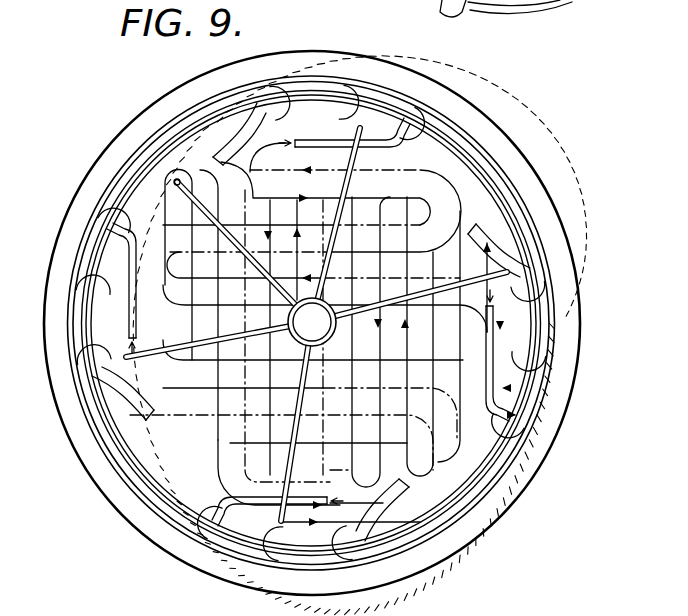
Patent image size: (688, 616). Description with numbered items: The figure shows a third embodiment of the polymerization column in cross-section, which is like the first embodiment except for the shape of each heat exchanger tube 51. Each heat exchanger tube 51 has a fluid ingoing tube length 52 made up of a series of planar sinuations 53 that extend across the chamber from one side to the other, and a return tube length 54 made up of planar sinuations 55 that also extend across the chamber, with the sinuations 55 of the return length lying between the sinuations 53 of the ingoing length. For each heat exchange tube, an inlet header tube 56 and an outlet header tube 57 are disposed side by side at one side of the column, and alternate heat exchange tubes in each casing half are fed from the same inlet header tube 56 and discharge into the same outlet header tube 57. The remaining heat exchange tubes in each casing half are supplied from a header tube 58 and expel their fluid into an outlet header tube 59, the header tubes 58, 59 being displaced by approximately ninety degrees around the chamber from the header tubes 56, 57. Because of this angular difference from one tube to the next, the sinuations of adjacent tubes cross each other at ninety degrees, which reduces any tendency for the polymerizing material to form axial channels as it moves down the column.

The heat exchanger tube 51 is at (461, 200).
The fluid ingoing tube length 52 is at (230, 108).
The planar sinuations 53 is at (152, 198).
The return tube length 54 is at (503, 322).
The planar sinuations 55 is at (492, 406).
The inlet header tube 56 is at (348, 62).
The outlet header tube 57 is at (426, 113).
The header tube 58 is at (97, 365).
The outlet header tube 59 is at (112, 232).